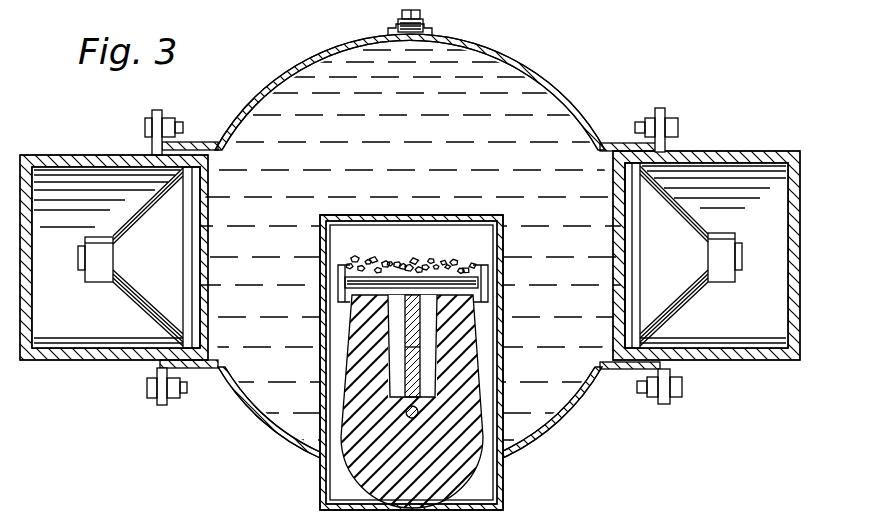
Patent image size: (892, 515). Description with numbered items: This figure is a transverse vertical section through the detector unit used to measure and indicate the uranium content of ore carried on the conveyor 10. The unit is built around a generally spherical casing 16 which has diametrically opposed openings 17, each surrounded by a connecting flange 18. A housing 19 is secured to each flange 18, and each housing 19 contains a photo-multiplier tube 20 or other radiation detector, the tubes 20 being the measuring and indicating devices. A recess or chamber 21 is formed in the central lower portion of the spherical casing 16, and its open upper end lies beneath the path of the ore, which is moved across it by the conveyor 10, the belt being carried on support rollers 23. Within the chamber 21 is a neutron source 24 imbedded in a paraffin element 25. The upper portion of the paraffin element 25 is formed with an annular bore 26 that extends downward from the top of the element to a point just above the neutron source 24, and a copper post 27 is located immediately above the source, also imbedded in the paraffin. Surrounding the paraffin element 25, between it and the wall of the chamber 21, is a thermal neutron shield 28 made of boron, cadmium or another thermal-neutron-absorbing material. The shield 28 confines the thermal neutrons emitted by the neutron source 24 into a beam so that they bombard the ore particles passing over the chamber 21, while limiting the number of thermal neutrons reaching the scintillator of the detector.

The conveyor 10 is at (380, 262).
The spherical casing 16 is at (538, 72).
The openings 17 is at (627, 152).
The connecting flanges 18 is at (662, 108).
The housings 19 is at (746, 151).
The photo-multiplier tube 20 is at (645, 226).
The chamber 21 is at (484, 344).
The support rollers 23 is at (348, 292).
The neutron source 24 is at (417, 412).
The paraffin element 25 is at (462, 467).
The annular bore 26 is at (428, 318).
The copper post 27 is at (420, 362).
The thermal neutron shield 28 is at (500, 497).